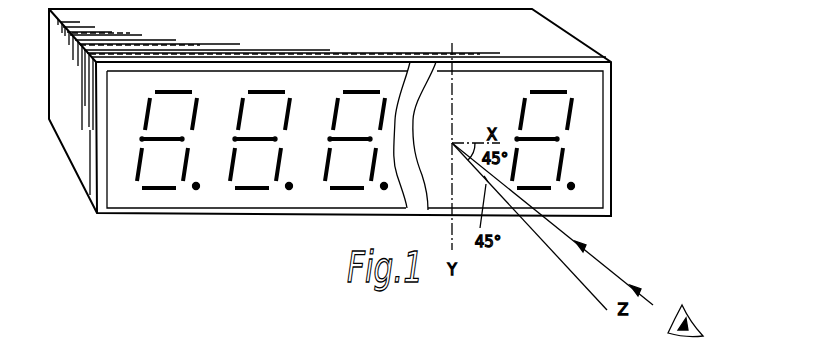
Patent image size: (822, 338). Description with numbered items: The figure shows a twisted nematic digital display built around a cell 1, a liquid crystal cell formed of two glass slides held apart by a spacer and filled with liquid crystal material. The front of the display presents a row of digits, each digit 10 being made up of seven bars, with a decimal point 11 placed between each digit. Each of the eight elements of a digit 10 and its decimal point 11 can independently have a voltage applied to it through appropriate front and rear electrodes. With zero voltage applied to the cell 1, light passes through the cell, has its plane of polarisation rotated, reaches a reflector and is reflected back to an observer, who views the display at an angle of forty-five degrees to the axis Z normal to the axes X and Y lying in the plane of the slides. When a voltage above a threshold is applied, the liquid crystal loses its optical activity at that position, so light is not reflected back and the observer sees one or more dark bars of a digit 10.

The cell 1 is at (356, 171).
The digit 10 is at (161, 190).
The decimal point 11 is at (197, 189).